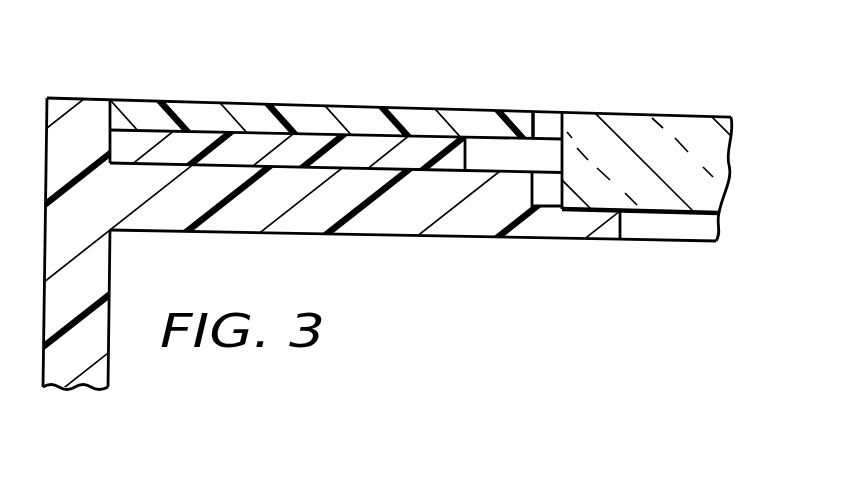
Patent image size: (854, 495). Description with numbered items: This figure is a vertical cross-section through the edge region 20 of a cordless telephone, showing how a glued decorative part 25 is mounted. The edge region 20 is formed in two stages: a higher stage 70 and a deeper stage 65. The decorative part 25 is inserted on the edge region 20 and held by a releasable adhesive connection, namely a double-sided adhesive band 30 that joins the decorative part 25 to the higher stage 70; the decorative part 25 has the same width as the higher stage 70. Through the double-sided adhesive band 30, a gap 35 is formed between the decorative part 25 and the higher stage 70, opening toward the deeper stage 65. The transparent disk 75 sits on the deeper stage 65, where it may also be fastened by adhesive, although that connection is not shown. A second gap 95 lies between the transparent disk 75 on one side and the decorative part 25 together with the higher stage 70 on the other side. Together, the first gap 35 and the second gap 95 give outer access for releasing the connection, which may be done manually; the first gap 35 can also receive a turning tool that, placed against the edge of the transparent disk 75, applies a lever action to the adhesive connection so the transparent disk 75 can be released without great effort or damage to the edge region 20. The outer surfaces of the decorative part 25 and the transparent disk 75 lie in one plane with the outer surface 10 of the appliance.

The outer surface of the appliance 10 is at (84, 97).
The edge region 20 is at (408, 222).
The double-sided adhesive band 30 is at (196, 142).
The decorative part 25 is at (380, 107).
The higher stage 70 is at (301, 160).
The gap 35 is at (532, 156).
The second gap 95 is at (547, 192).
The transparent disk 75 is at (693, 120).
The deeper stage 65 is at (613, 228).